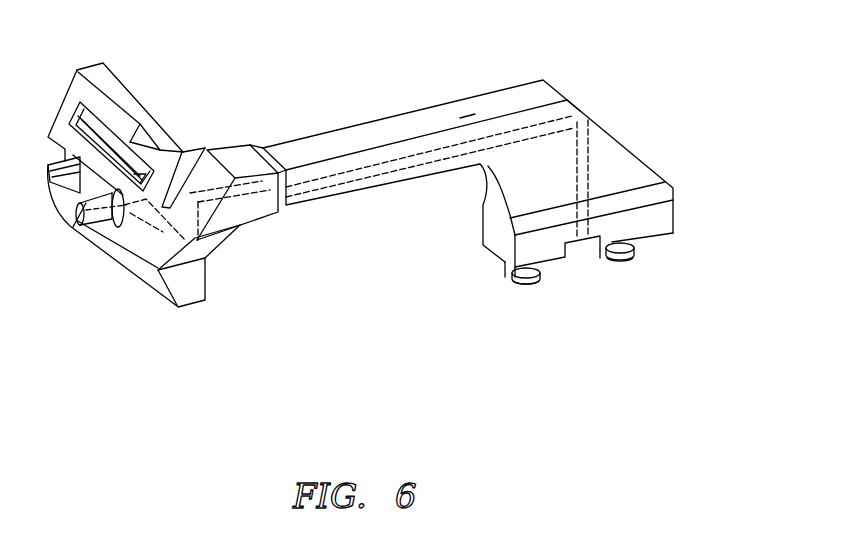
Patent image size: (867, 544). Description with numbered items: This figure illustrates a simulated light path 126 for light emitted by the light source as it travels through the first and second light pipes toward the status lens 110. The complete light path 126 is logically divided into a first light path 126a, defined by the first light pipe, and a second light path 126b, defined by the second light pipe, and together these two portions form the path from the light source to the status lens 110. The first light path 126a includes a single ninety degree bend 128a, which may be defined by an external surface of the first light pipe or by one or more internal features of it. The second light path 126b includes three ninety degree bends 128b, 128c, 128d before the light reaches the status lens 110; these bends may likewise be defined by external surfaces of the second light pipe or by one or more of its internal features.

The status lens 110 is at (72, 226).
The light path 126 is at (590, 178).
The first light path 126a is at (462, 123).
The second light path 126b is at (167, 210).
The 90 degree bend 128a is at (573, 105).
The 90 degree bend 128b is at (208, 208).
The 90 degree bend 128c is at (194, 280).
The 90 degree bend 128d is at (147, 193).